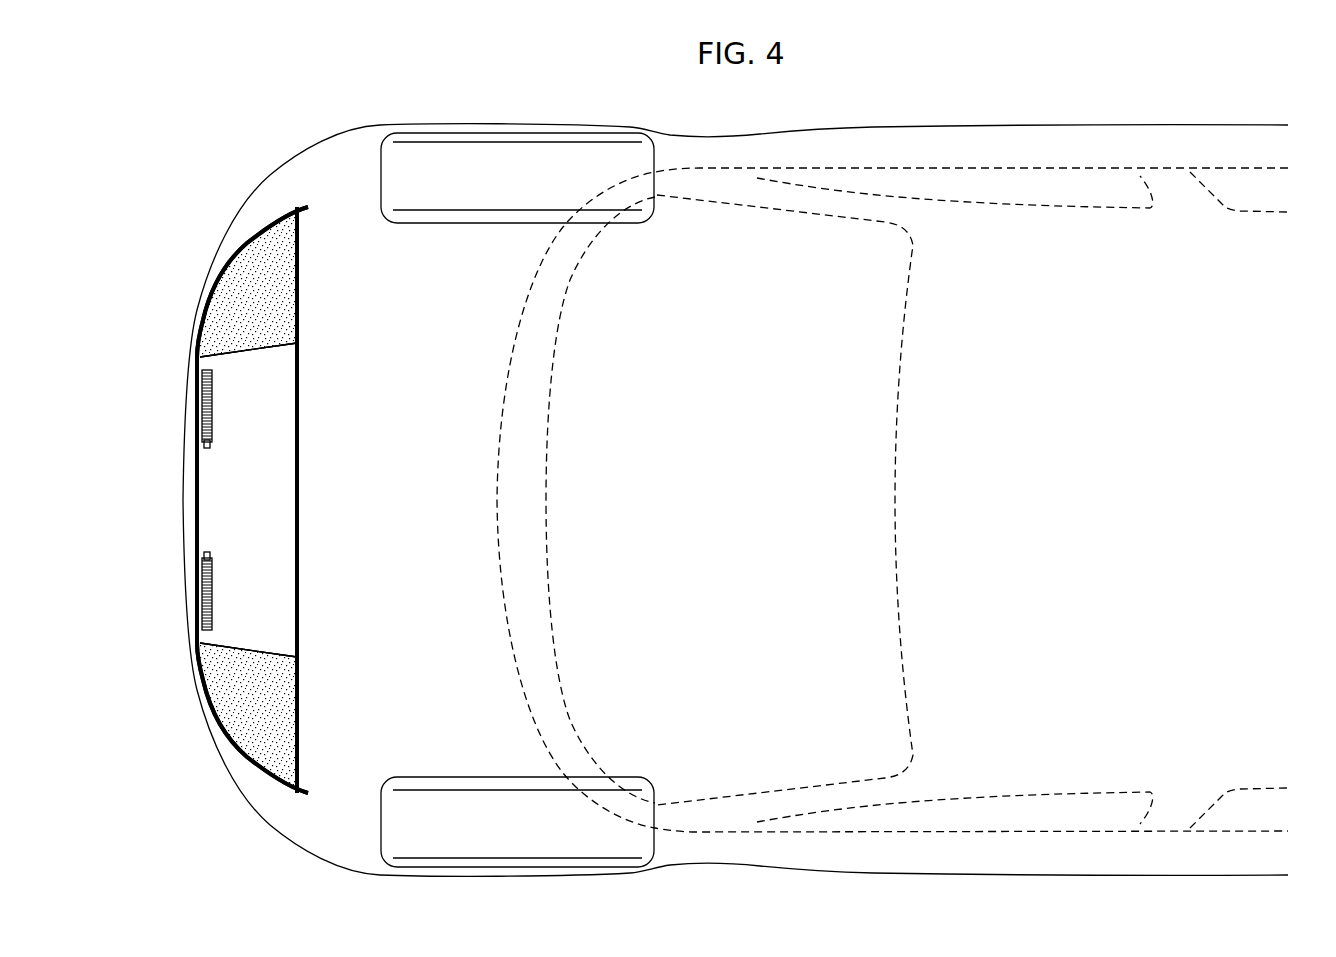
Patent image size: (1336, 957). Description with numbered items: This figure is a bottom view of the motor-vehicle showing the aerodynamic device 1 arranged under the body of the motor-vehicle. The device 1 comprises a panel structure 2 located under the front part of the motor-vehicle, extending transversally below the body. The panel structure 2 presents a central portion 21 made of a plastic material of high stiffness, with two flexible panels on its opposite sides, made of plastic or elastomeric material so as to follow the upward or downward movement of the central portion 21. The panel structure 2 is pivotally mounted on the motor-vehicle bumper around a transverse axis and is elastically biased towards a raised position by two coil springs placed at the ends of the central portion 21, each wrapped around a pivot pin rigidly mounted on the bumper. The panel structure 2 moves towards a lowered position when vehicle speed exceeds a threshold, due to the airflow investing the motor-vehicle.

The aerodynamic device 1 is at (336, 521).
The panel structure 2 is at (186, 483).
The central portion 21 is at (288, 370).